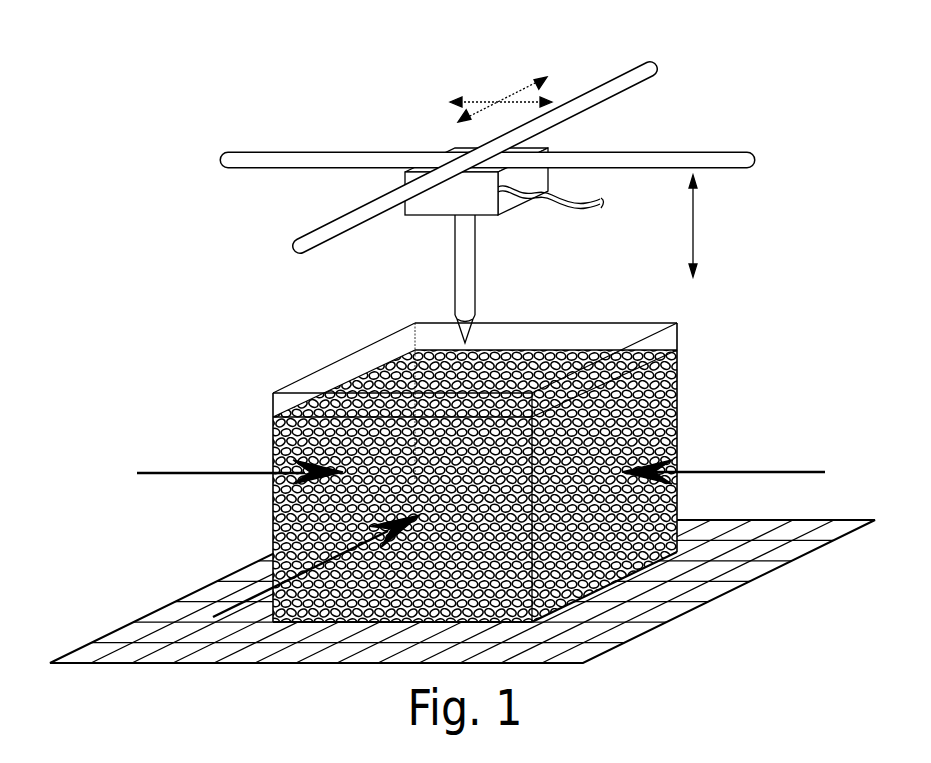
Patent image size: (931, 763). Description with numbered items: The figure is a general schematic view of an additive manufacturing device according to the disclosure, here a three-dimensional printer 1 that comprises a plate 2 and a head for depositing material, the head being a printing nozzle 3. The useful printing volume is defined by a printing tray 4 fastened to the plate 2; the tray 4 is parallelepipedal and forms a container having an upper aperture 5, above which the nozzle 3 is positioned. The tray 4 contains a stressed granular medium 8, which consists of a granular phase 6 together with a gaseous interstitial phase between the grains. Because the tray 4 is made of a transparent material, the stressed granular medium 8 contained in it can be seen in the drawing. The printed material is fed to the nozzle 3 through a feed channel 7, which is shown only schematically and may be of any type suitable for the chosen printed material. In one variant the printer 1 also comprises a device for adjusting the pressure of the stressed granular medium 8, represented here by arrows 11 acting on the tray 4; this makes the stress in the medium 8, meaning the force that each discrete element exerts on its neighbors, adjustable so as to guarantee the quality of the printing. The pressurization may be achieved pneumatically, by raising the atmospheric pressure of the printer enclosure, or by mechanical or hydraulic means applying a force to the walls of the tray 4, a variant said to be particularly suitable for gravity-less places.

The 3D printer 1 is at (484, 177).
The plate 2 is at (747, 548).
The printing nozzle 3 is at (463, 262).
The printing tray 4 is at (463, 439).
The upper aperture 5 is at (568, 330).
The granular phase 6 is at (679, 407).
The feed channel 7 is at (561, 197).
The stressed granular medium 8 is at (262, 521).
The arrows 11 is at (258, 470).